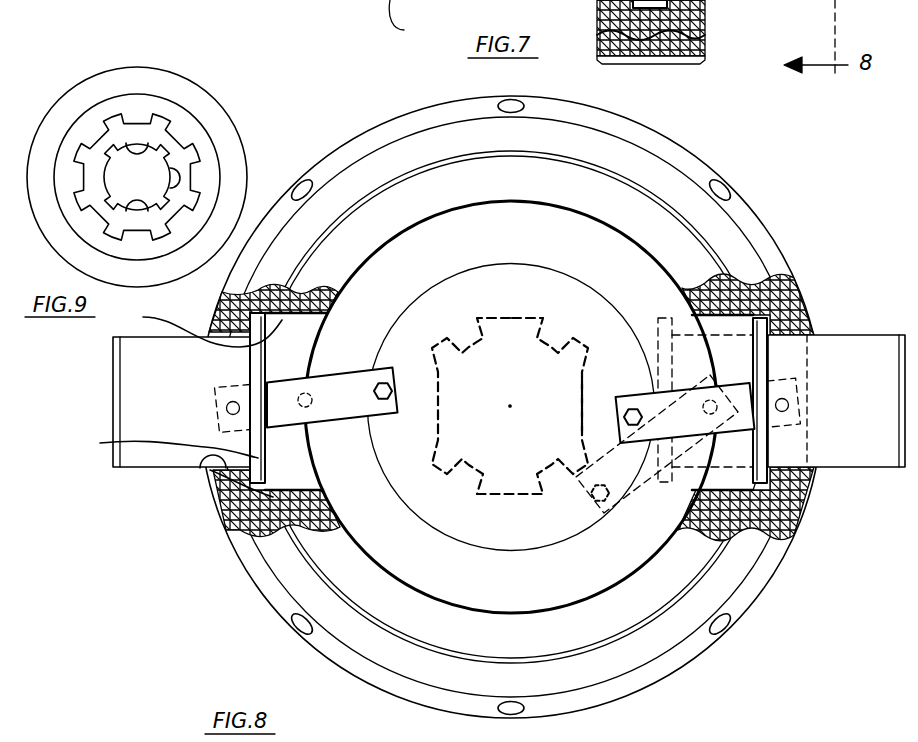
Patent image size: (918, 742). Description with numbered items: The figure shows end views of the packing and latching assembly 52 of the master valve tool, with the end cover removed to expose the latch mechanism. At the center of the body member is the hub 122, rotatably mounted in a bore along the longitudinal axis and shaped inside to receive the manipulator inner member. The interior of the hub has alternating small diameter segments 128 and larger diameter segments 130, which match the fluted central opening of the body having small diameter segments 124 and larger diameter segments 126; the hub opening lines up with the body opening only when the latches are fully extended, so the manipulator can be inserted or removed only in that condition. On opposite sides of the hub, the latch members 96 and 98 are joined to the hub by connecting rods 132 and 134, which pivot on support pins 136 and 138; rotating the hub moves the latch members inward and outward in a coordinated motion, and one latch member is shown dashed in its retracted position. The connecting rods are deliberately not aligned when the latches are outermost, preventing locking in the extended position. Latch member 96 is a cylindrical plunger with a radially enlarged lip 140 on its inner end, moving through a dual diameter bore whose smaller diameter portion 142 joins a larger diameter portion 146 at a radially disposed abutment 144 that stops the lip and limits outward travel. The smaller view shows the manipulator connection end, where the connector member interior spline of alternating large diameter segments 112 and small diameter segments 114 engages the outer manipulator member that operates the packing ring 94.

In FIG. 8, the packing and latching assembly 52 is at (704, 149).
In FIG. 7, the packing ring 94 is at (411, 23).
In FIG. 8, the latch member 96 is at (148, 458).
In FIG. 7, the latch member 98 is at (700, 17).
In FIG. 8, the latch member 98 is at (812, 334).
In FIG. 9, the large diameter segments 112 is at (173, 123).
In FIG. 9, the small diameter segments 114 is at (100, 143).
In FIG. 8, the hub 122 is at (534, 268).
In FIG. 9, the small diameter segments 124 is at (157, 182).
In FIG. 9, the larger diameter segments 126 is at (160, 147).
In FIG. 8, the small diameter segments 128 is at (578, 430).
In FIG. 8, the larger diameter segments 130 is at (578, 376).
In FIG. 8, the connecting rod 132 is at (318, 333).
In FIG. 8, the connecting rod 134 is at (712, 378).
In FIG. 8, the support pin 136 is at (385, 412).
In FIG. 8, the support pin 138 is at (634, 407).
In FIG. 8, the radially enlarged lip 140 is at (112, 440).
In FIG. 8, the smaller diameter portion 142 is at (200, 470).
In FIG. 8, the radially disposed abutment 144 is at (262, 512).
In FIG. 8, the larger diameter portion 146 is at (191, 325).